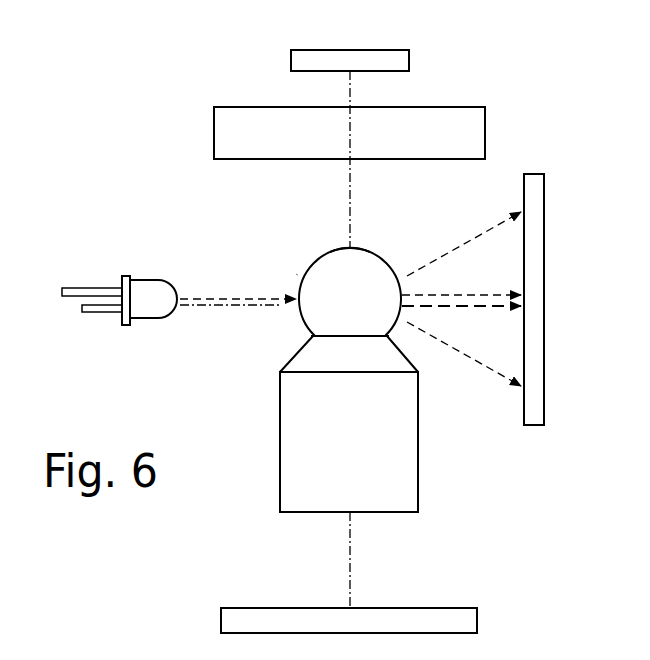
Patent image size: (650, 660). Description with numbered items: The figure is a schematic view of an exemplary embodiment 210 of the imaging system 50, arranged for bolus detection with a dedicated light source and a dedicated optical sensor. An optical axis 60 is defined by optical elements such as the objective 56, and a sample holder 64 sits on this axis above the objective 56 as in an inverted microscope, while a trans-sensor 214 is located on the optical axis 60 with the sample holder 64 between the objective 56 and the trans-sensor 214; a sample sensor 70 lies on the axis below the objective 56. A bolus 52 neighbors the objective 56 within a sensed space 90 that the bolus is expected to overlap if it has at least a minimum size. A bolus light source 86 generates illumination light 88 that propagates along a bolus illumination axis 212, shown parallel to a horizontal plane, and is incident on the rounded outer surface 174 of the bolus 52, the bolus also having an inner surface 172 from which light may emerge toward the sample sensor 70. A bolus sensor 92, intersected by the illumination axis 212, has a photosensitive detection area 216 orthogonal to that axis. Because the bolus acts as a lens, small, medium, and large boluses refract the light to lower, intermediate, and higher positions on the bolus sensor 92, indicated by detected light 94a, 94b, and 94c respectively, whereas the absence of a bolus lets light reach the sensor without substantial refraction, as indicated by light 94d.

The imaging system 50 is at (102, 122).
The exemplary embodiment of imaging system 210 is at (119, 182).
The trans-sensor 214 is at (323, 50).
The sample holder 64 is at (262, 107).
The optical axis 60 is at (352, 186).
The rounded outer surface 174 is at (340, 248).
The bolus 52 is at (326, 256).
The space 90 is at (294, 272).
The illumination light 88 is at (241, 297).
The bolus illumination axis 212 is at (255, 307).
The bolus light source 86 is at (150, 279).
The inner surface 172 is at (358, 338).
The objective 56 is at (277, 443).
The sample sensor 70 is at (292, 608).
The bolus sensor 92 is at (547, 357).
The photosensitive detection area 216 is at (522, 410).
The detected light 94a is at (493, 377).
The detected light 94b is at (490, 293).
The detected light 94c is at (493, 225).
The detected light 94d is at (490, 308).